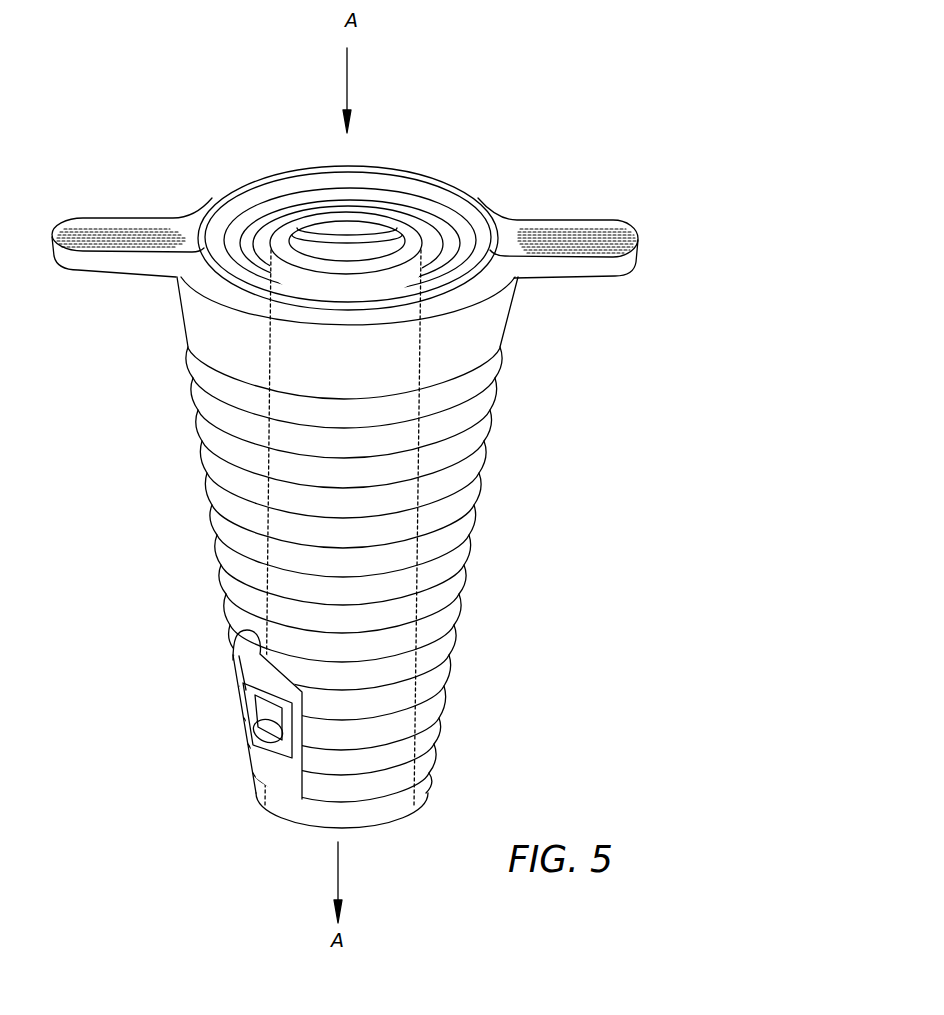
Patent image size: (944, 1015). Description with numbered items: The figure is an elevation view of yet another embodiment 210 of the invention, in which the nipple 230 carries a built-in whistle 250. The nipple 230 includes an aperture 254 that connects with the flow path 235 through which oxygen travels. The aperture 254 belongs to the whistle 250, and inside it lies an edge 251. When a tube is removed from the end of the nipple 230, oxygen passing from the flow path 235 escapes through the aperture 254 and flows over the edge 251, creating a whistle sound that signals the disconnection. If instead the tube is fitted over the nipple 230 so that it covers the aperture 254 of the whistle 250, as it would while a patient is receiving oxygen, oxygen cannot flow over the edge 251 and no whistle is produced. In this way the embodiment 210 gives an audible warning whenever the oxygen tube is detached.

The embodiment 210 is at (490, 151).
The nipple 230 is at (450, 647).
The flow path 235 is at (418, 582).
The whistle 250 is at (233, 636).
The aperture 254 is at (282, 710).
The edge 251 is at (253, 724).